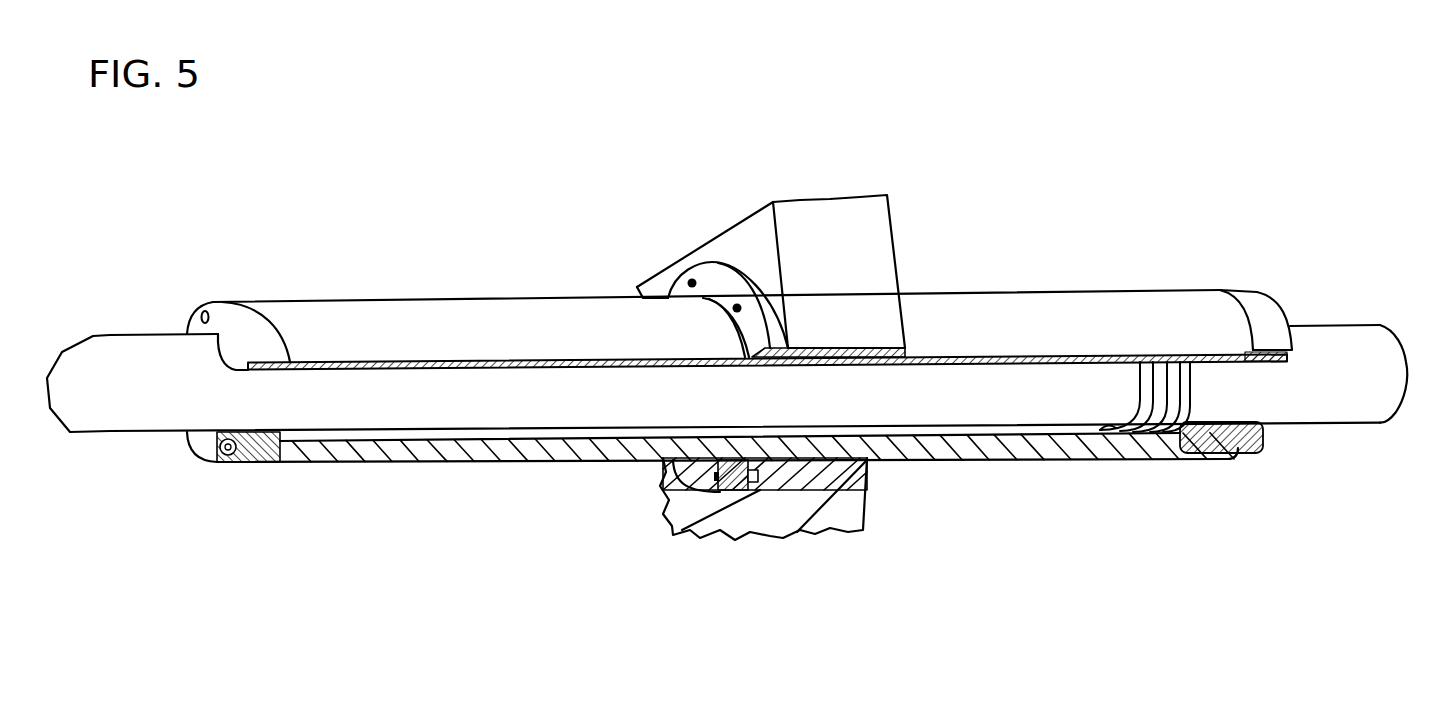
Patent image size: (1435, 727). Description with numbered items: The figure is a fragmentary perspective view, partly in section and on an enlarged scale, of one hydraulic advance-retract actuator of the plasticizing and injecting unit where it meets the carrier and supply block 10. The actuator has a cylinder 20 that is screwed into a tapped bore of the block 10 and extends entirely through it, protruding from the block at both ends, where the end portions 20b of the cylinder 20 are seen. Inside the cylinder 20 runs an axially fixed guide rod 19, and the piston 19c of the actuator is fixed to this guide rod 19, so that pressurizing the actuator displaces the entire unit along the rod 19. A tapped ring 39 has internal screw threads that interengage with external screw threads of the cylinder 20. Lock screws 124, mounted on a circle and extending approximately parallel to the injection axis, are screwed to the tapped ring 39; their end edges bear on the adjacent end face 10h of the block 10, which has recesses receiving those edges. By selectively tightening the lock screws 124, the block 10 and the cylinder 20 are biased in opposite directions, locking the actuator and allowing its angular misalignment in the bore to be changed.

The carrier and supply block 10 is at (893, 191).
The end face of the carrier and supply block 10h is at (747, 255).
The lock screws 124 is at (688, 283).
The tapped ring 39 is at (763, 315).
The end cap of tube 20b is at (254, 328).
The cylinder 20 is at (1055, 335).
The guide rods 19 is at (1385, 390).
The pistons 19c is at (1160, 433).